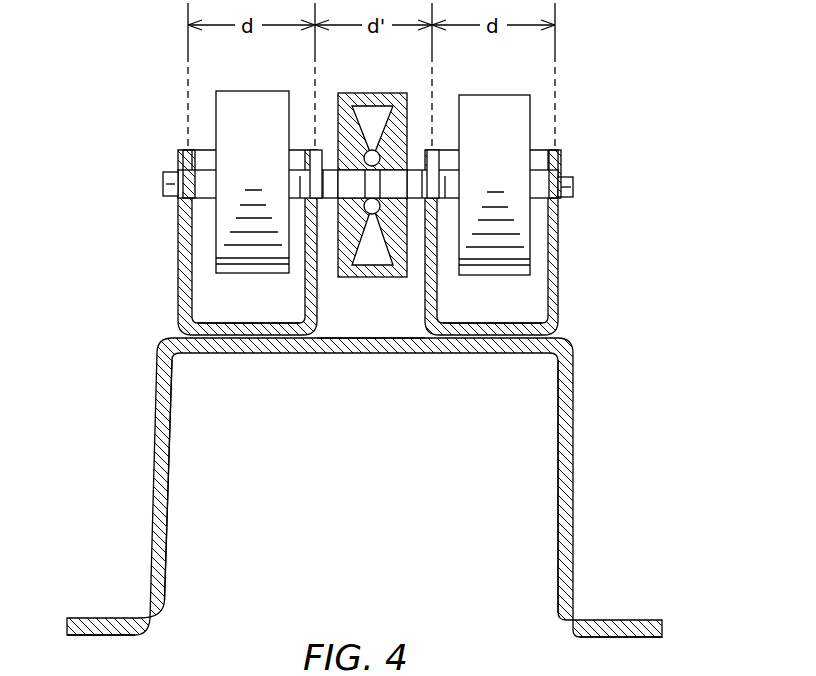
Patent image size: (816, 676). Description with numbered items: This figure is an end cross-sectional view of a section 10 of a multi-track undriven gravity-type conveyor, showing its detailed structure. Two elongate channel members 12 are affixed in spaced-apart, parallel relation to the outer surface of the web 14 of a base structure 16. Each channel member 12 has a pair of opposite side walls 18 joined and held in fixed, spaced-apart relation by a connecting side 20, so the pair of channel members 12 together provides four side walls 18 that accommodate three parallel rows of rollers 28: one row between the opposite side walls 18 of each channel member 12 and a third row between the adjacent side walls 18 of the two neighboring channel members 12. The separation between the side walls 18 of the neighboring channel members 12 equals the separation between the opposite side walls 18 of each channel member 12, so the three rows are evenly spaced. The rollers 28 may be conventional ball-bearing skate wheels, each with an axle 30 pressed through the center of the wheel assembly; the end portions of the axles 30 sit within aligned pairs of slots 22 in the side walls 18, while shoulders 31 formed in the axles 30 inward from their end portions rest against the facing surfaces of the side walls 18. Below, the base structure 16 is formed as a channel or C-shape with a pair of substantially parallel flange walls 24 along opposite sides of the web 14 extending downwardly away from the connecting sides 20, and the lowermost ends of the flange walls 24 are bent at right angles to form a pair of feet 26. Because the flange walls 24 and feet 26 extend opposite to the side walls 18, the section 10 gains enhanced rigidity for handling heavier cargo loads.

The multi-track section 10 is at (134, 168).
The channel member 12 is at (364, 232).
The web 14 is at (355, 330).
The base structure 16 is at (364, 487).
The side wall 18 is at (178, 300).
The connecting side 20 is at (215, 323).
The slot 22 is at (186, 162).
The flange wall 24 is at (165, 545).
The foot 26 is at (635, 620).
The roller 28 is at (388, 95).
The axle 30 is at (578, 186).
The shoulder 31 is at (205, 190).